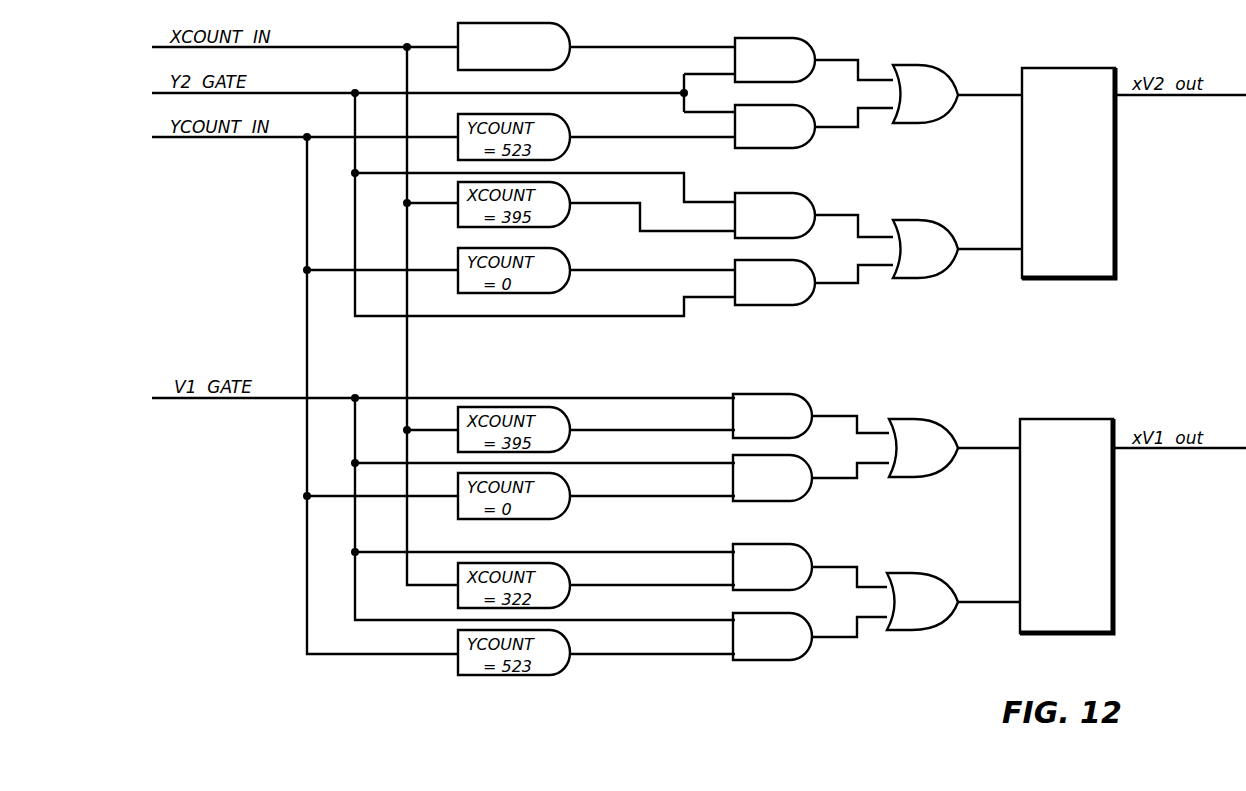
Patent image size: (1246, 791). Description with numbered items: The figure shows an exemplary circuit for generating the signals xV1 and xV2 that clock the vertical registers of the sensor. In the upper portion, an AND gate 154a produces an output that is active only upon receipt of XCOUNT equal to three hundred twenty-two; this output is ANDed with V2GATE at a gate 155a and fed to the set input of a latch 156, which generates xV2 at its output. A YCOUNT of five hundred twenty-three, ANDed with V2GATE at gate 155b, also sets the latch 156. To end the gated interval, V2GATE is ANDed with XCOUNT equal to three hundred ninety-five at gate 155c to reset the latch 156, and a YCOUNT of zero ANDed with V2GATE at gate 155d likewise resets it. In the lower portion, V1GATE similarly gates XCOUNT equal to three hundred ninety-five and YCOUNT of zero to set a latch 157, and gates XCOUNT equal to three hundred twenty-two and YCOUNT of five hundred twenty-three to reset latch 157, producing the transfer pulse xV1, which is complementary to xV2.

The AND gate 154a is at (564, 23).
The gate 155a is at (792, 38).
The gate 155b is at (792, 105).
The gate 155c is at (793, 193).
The gate 155d is at (791, 260).
The latch 156 is at (1076, 68).
The latch 157 is at (1062, 419).